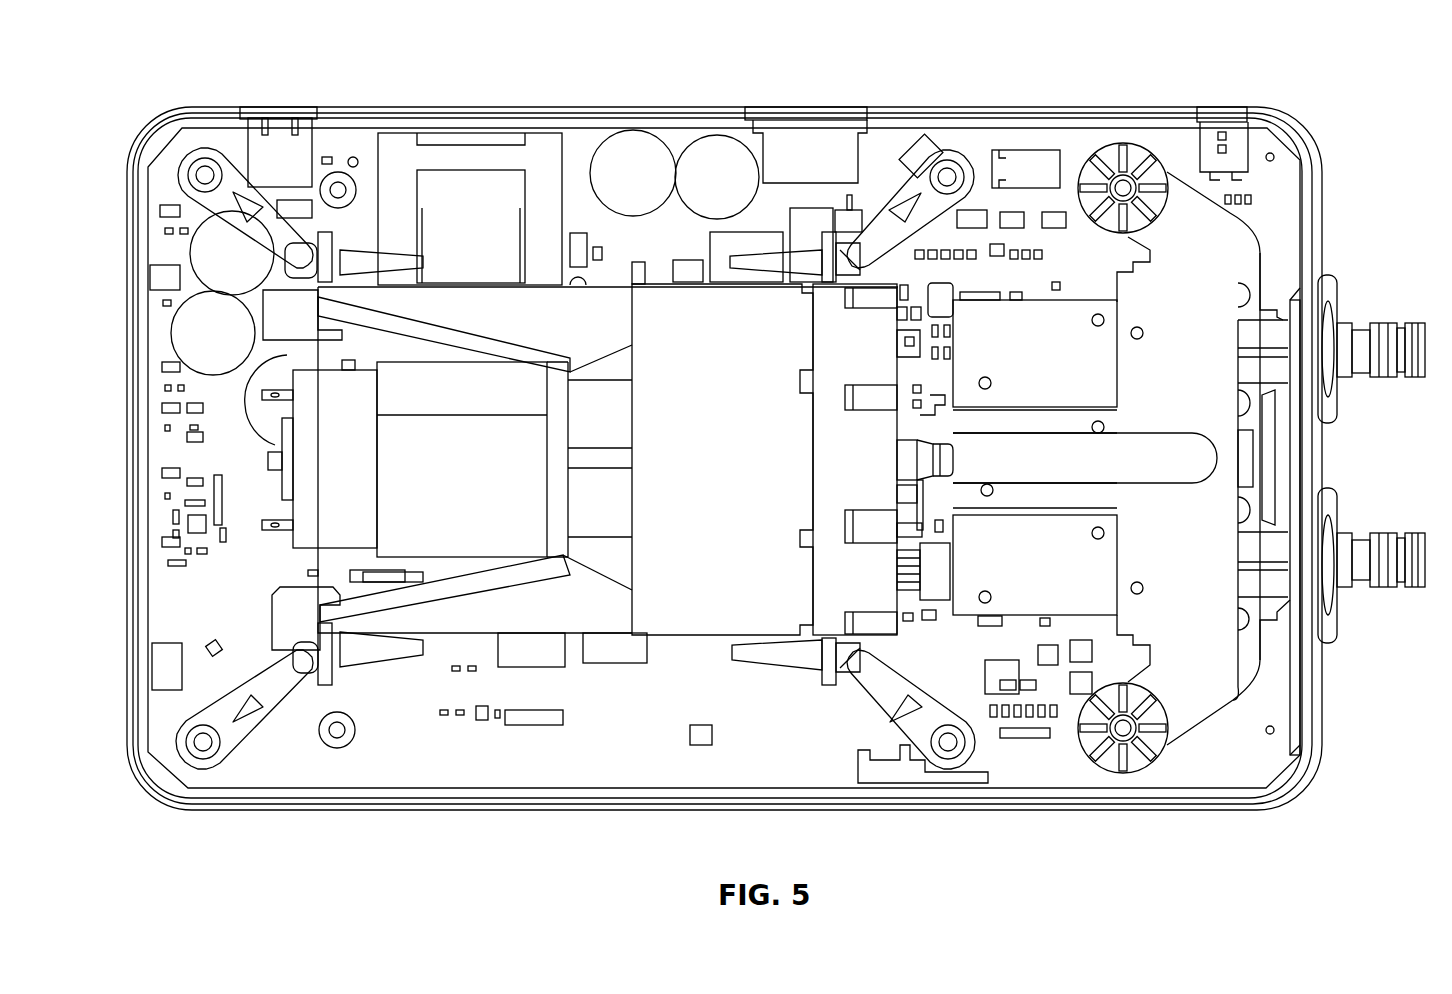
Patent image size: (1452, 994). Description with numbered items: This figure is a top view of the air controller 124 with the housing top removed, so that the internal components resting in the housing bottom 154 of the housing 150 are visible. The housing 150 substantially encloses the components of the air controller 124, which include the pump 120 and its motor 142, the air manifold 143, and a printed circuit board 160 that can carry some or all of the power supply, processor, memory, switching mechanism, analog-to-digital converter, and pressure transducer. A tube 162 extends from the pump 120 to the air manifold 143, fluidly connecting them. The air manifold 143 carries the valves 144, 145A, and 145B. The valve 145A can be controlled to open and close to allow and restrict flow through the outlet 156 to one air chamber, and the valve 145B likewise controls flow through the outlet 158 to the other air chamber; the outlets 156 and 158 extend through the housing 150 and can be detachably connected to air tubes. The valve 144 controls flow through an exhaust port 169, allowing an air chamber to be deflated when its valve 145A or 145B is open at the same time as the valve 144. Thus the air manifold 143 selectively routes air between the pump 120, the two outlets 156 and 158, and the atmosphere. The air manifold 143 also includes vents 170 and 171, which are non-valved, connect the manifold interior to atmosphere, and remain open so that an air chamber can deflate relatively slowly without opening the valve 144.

The air controller 124 is at (201, 98).
The pump 120 is at (662, 284).
The motor 142 is at (348, 481).
The air manifold 143 is at (1188, 263).
The valve 144 is at (1010, 427).
The valve 145A is at (1065, 575).
The valve 145B is at (1065, 355).
The housing 150 is at (163, 802).
The housing bottom 154 is at (238, 808).
The outlet 156 is at (1385, 600).
The outlet 158 is at (1385, 325).
The printed circuit board 160 is at (548, 752).
The tube 162 is at (1173, 478).
The exhaust port 169 is at (1255, 461).
The vent 170 is at (1144, 588).
The vent 171 is at (1144, 332).